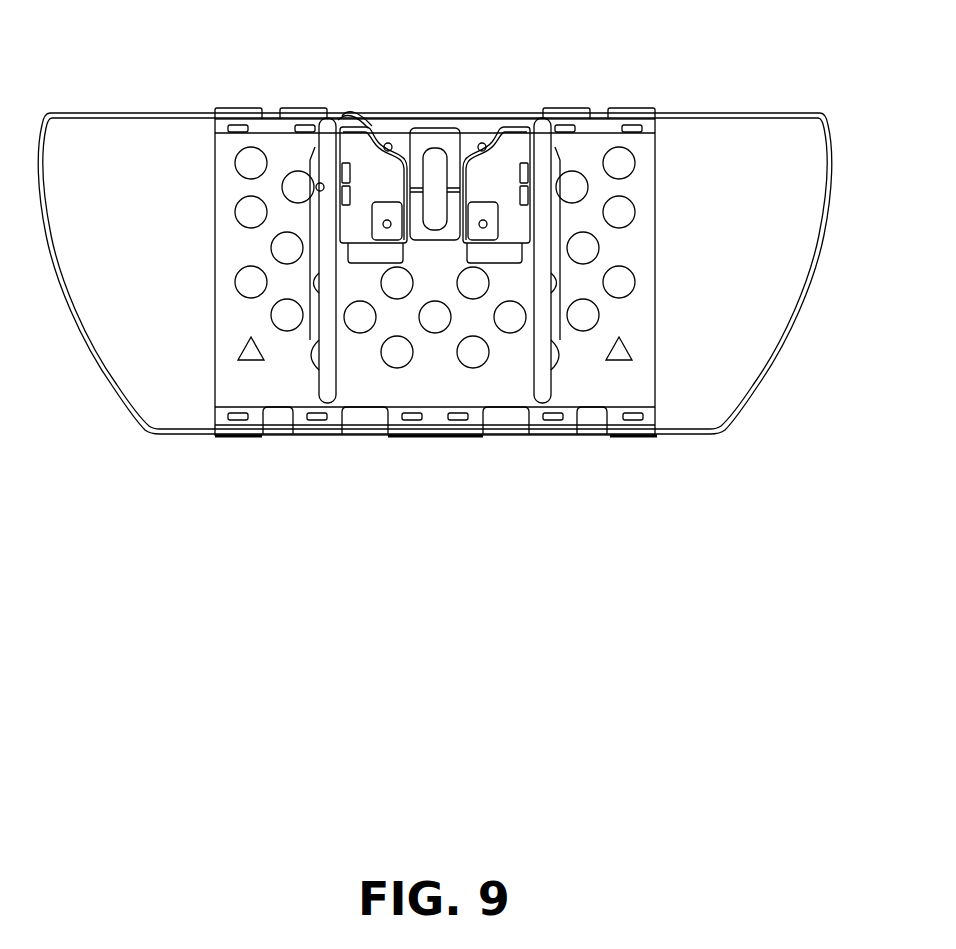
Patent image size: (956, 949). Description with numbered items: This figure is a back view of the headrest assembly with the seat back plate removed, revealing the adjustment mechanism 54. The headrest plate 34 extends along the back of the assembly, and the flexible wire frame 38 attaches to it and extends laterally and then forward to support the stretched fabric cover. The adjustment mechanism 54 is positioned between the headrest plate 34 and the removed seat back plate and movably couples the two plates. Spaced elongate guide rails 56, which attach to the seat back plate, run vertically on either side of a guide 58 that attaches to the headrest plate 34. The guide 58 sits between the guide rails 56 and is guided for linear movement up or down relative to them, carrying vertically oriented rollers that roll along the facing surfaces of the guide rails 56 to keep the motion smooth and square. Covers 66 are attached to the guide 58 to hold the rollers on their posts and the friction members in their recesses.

The headrest plate 34 is at (218, 250).
The flexible wire frame 38 is at (768, 378).
The adjustment mechanism 54 is at (336, 104).
The guide rails 56 is at (327, 145).
The guide 58 is at (403, 143).
The covers 66 is at (363, 142).